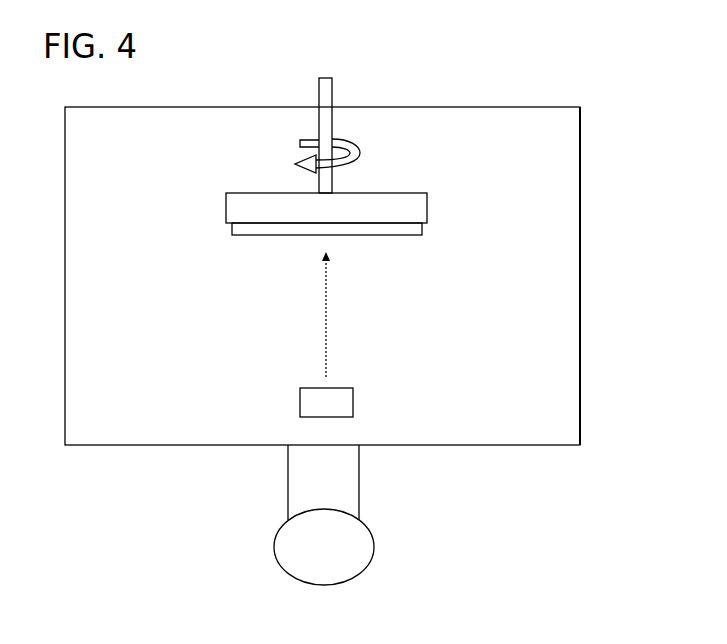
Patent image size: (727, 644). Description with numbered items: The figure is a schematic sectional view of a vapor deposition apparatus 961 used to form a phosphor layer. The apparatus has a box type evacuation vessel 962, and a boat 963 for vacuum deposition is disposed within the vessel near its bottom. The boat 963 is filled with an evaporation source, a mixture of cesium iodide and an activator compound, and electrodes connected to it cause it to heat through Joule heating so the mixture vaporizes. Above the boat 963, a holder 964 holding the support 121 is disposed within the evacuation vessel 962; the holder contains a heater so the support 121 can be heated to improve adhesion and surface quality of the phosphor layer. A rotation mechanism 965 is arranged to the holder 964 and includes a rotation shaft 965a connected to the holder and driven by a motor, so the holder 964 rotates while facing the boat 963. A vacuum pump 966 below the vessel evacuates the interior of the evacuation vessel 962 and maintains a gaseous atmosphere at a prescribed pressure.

The vapor deposition apparatus 961 is at (372, 72).
The evacuation vessel 962 is at (582, 189).
The boat 963 is at (355, 401).
The holder 964 is at (430, 208).
The support 121 is at (424, 228).
The rotation mechanism 965 is at (346, 134).
The rotation shaft 965a is at (318, 128).
The vacuum pump 966 is at (375, 545).